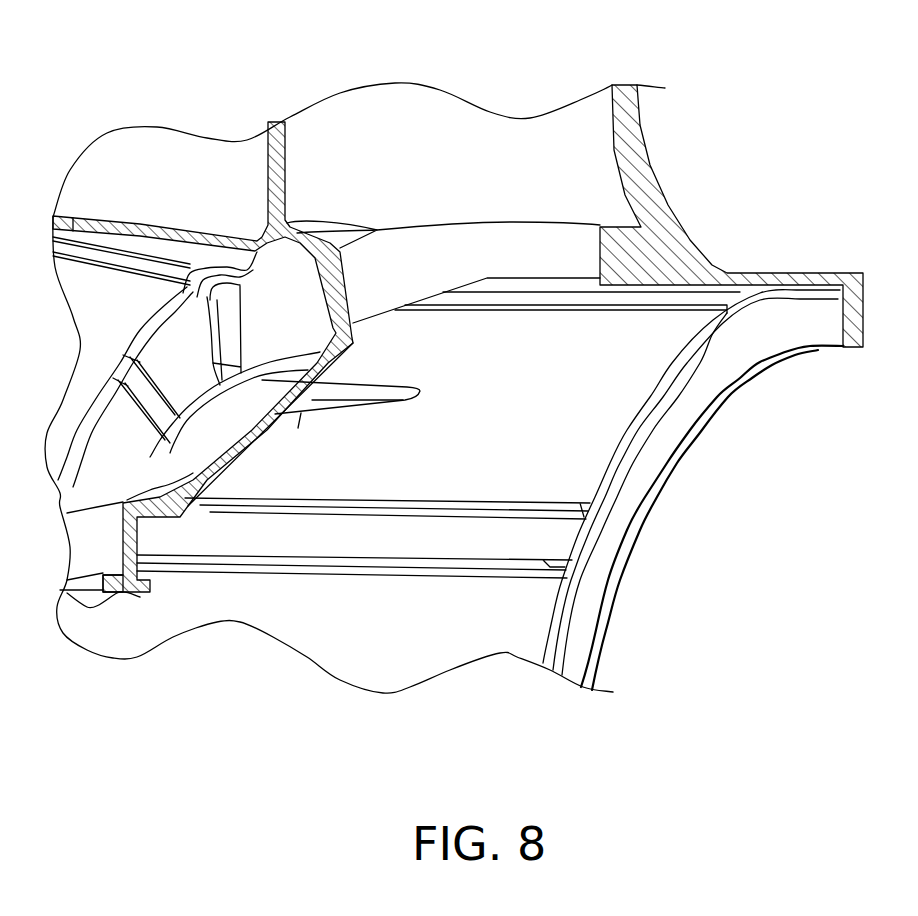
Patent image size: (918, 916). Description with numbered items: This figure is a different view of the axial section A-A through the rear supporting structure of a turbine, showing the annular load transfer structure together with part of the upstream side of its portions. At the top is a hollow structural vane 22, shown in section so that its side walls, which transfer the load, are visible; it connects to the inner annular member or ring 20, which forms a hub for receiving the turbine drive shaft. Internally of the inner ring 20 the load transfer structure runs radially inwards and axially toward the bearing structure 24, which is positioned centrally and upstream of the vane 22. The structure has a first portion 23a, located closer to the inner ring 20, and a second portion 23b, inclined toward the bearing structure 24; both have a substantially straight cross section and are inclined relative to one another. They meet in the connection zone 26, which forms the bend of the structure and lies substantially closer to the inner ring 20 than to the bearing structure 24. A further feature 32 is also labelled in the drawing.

The inner annular member 20 is at (167, 240).
The structural vane 22 is at (640, 167).
The first portion 23a is at (303, 300).
The second portion 23b is at (217, 427).
The bearing structure 24 is at (93, 547).
The connection zone 26 is at (297, 347).
The tab 32 is at (358, 287).